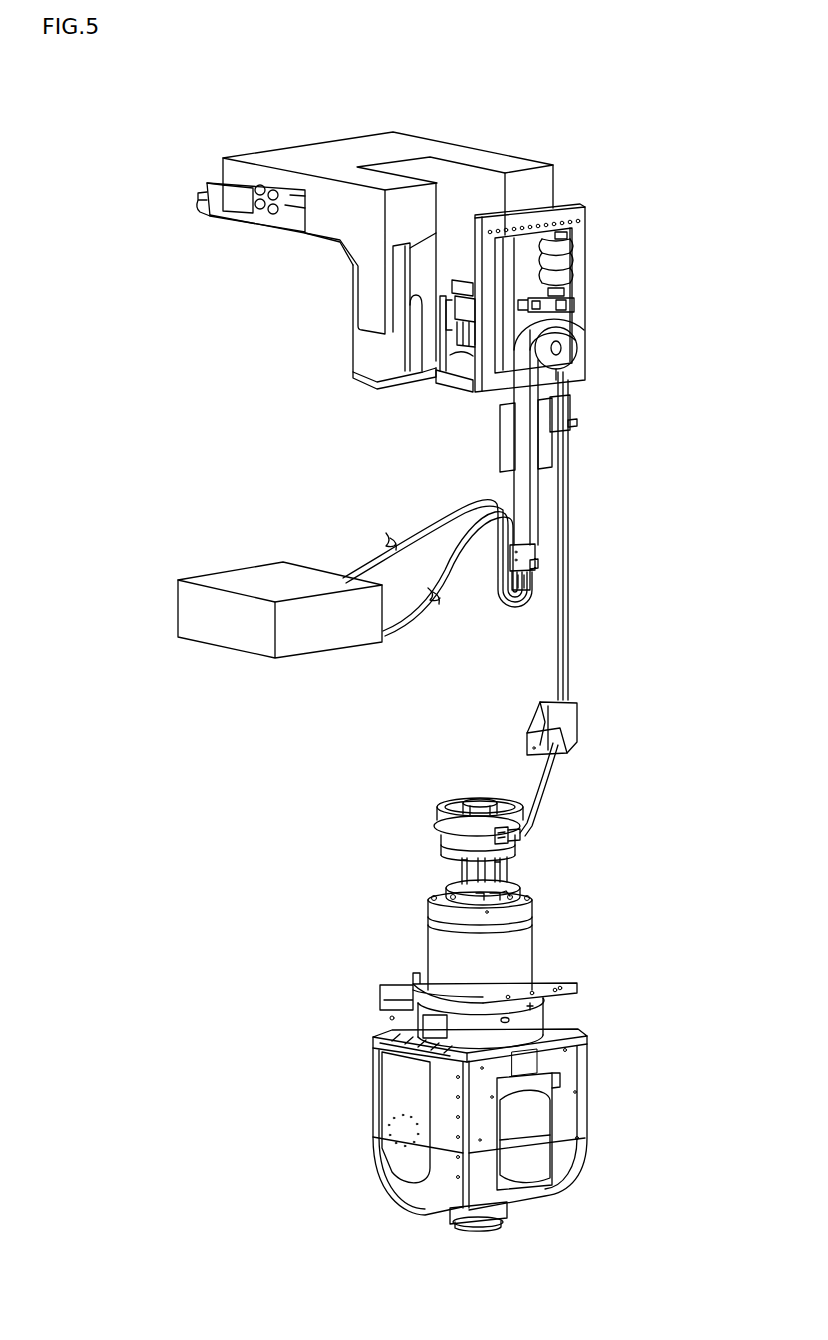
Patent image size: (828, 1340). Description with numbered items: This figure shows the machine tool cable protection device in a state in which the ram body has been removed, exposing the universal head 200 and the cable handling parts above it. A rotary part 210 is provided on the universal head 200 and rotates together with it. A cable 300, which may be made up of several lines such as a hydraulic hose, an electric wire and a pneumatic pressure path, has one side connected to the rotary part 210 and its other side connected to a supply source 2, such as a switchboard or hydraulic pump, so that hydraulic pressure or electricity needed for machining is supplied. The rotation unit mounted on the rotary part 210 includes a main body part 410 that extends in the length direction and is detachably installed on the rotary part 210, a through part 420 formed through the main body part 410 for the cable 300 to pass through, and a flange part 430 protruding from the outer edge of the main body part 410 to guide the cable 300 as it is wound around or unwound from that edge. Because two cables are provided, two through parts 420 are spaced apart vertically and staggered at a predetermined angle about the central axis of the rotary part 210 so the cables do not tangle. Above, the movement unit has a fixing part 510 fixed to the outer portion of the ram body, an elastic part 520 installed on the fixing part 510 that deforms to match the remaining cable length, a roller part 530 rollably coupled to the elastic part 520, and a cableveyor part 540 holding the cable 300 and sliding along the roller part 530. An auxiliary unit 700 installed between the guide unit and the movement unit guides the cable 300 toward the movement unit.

The supply source 2 is at (233, 568).
The universal head 200 is at (366, 1088).
The rotary part 210 is at (467, 848).
The cable 300 is at (406, 524).
The main body part 410 is at (500, 805).
The through part 420 is at (527, 823).
The flange part 430 is at (448, 806).
The fixing part 510 is at (543, 216).
The elastic part 520 is at (567, 268).
The roller part 530 is at (568, 357).
The cableveyor part 540 is at (530, 480).
The auxiliary unit 700 is at (583, 713).